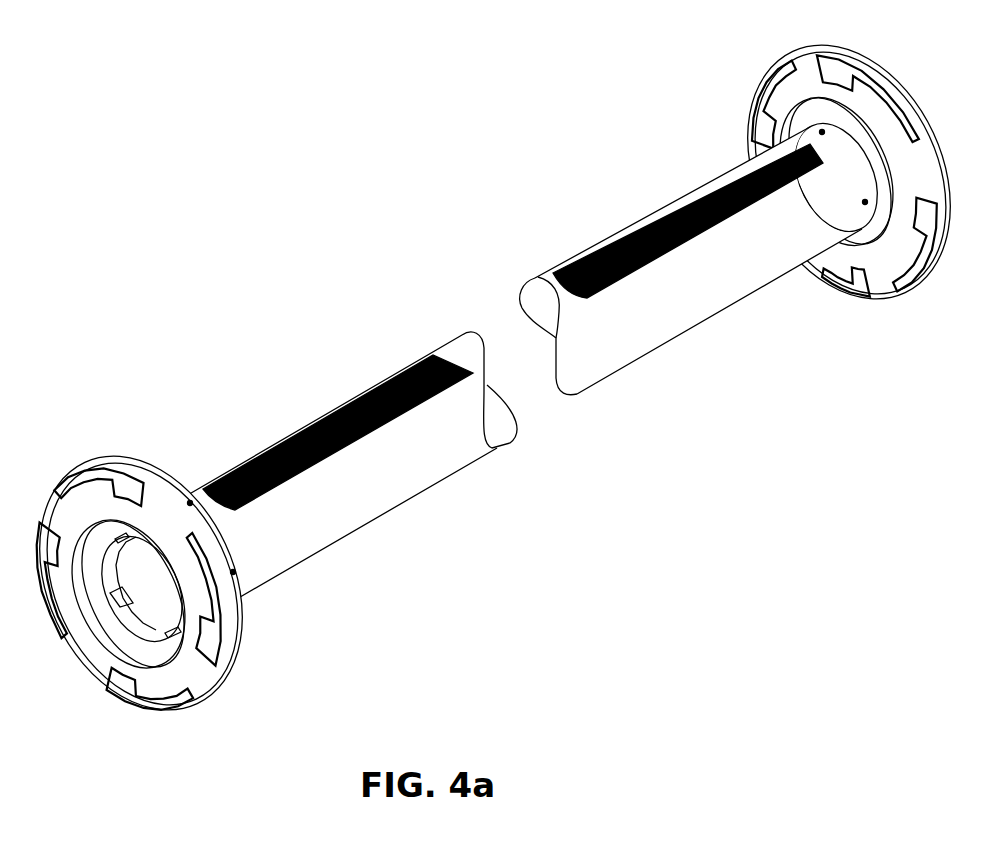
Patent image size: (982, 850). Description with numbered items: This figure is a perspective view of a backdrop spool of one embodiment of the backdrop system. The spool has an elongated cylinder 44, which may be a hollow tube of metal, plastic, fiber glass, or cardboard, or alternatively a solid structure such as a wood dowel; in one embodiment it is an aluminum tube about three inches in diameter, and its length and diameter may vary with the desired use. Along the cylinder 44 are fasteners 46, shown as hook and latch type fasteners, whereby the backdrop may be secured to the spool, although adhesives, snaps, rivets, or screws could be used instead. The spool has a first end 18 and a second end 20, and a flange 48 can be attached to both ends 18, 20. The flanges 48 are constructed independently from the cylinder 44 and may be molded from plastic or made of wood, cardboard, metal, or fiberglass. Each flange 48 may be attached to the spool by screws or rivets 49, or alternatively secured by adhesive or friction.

The first end 18 is at (193, 495).
The second end 20 is at (853, 221).
The elongated cylinder 44 is at (369, 501).
The fasteners 46 is at (118, 470).
The flange 48 is at (837, 53).
The screws or rivets 49 is at (236, 573).